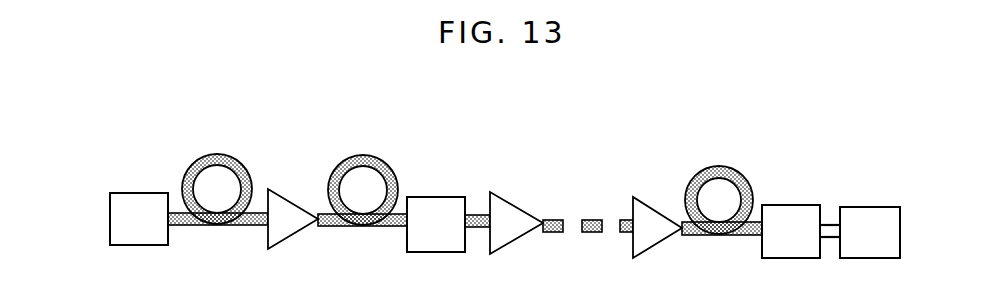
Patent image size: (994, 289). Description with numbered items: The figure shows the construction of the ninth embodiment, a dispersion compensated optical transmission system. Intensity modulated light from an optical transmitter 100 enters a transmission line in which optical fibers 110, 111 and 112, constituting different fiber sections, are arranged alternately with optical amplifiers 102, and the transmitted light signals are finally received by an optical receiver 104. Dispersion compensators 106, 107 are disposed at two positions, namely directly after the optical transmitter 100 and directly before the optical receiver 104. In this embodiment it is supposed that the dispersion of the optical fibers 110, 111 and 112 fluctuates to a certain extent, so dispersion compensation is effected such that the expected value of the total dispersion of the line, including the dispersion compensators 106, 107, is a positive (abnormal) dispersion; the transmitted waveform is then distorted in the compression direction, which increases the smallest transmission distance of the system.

The optical transmitter 100 is at (142, 200).
The optical fiber 110 is at (219, 158).
The optical fiber 111 is at (363, 158).
The dispersion compensator 106 is at (437, 205).
The optical amplifier 102 is at (508, 213).
The optical fiber 112 is at (712, 168).
The dispersion compensator 107 is at (790, 210).
The optical receiver 104 is at (868, 213).